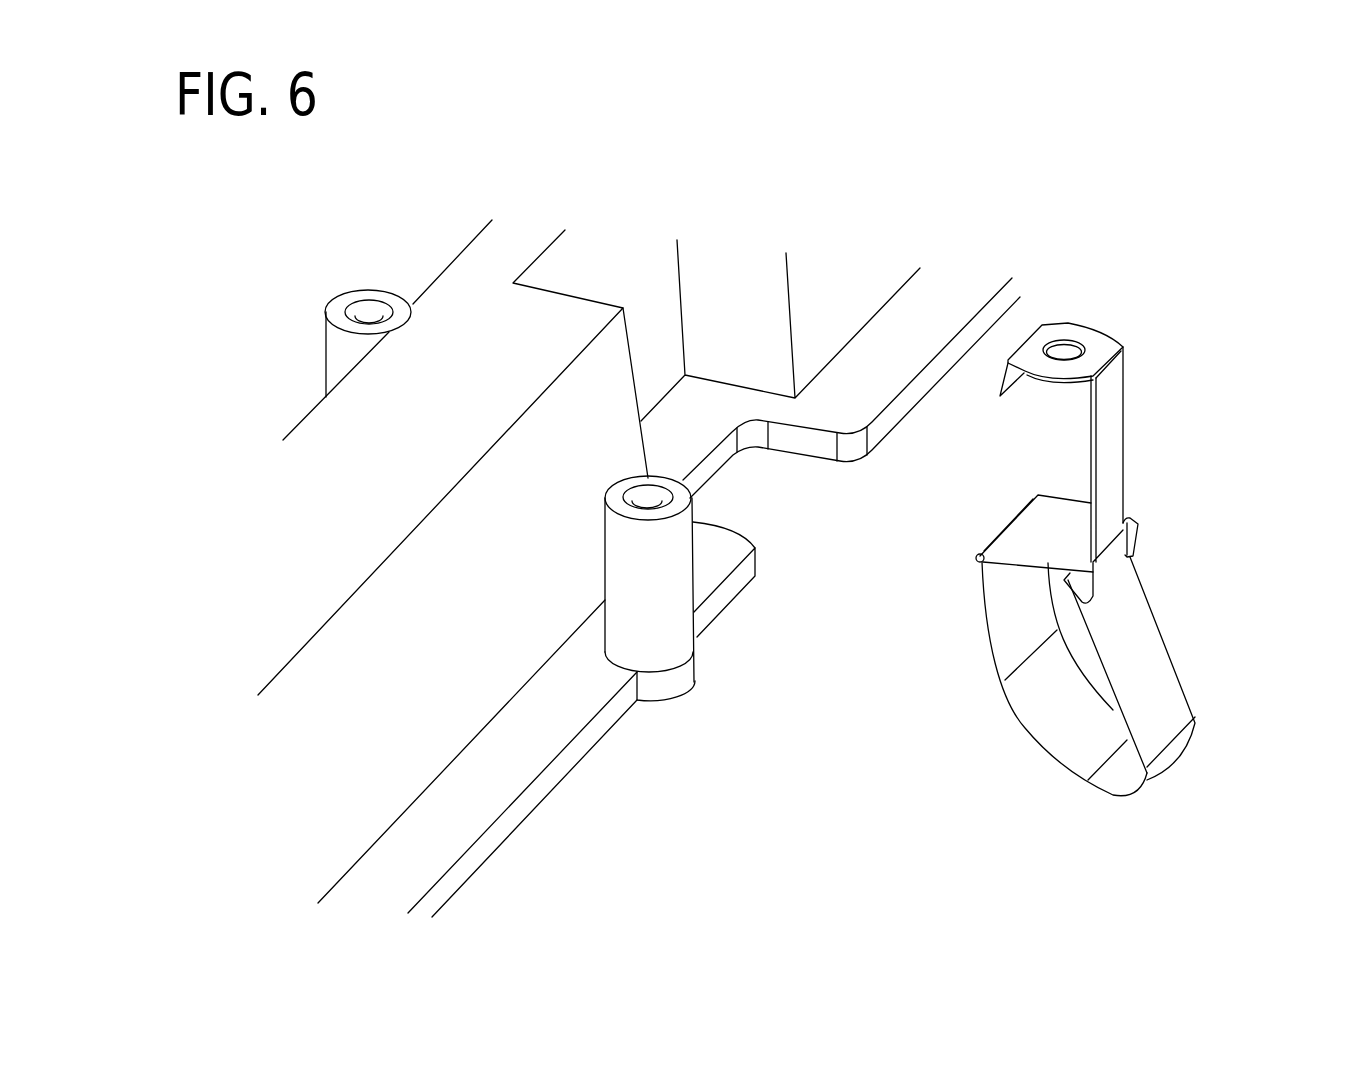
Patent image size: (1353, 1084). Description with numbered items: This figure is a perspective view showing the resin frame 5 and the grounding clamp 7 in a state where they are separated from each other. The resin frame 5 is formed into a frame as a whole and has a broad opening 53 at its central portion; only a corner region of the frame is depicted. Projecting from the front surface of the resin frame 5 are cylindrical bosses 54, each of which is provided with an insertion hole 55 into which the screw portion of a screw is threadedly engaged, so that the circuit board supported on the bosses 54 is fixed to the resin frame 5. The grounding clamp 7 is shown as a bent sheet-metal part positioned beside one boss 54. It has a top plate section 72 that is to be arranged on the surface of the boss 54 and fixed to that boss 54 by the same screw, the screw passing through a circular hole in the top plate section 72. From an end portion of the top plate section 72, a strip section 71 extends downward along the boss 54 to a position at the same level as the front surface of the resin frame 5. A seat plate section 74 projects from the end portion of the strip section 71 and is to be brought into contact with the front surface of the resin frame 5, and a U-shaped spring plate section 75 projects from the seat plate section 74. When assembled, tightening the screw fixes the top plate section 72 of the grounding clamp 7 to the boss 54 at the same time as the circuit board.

The resin frame 5 is at (442, 845).
The opening 53 is at (542, 782).
The boss 54 is at (335, 348).
The insertion hole 55 is at (642, 503).
The grounding clamp 7 is at (1082, 548).
The strip section 71 is at (1112, 400).
The top plate section 72 is at (1083, 335).
The seat plate section 74 is at (1018, 530).
The U-shaped spring plate section 75 is at (1065, 755).